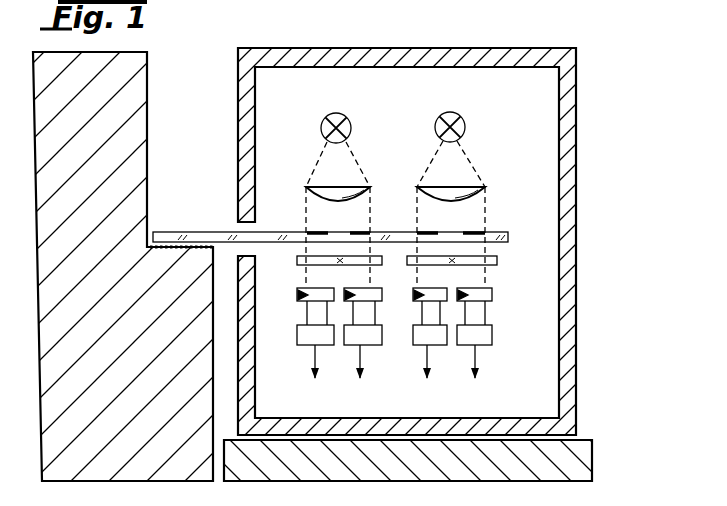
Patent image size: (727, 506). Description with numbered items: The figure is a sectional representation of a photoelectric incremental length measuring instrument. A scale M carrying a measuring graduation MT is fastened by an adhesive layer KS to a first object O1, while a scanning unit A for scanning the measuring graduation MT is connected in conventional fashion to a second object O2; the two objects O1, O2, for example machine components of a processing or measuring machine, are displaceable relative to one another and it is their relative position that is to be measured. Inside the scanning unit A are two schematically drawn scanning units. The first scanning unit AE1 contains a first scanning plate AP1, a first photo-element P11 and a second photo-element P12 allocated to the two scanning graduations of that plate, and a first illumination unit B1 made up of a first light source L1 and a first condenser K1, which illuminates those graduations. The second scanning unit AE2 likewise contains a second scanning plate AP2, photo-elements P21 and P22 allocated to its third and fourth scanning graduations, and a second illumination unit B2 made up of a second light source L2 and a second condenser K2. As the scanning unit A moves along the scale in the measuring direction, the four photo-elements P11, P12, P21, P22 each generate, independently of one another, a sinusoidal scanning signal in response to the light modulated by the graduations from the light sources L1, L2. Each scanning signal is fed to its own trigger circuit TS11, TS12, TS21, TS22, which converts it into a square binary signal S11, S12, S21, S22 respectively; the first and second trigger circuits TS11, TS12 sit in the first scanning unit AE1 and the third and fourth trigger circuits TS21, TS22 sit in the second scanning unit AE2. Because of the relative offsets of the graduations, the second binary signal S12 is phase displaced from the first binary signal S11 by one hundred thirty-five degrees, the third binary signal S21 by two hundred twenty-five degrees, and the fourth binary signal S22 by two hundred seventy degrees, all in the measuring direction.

The first object O1 is at (140, 93).
The second object O2 is at (588, 451).
The scanning unit A is at (583, 207).
The adhesive layer KS is at (189, 240).
The scale M is at (498, 229).
The measuring graduation MT is at (354, 230).
The first scanning plate AP1 is at (297, 261).
The second scanning plate AP2 is at (497, 260).
The first scanning unit AE1 is at (350, 108).
The second scanning unit AE2 is at (464, 108).
The first light source L1 is at (322, 127).
The second light source L2 is at (436, 126).
The first illumination unit B1 is at (364, 166).
The second illumination unit B2 is at (477, 166).
The first condenser K1 is at (335, 194).
The second condenser K2 is at (449, 194).
The first photo-element P11 is at (297, 295).
The second photo-element P12 is at (380, 291).
The photo-element P21 is at (412, 294).
The photo-element P22 is at (492, 294).
The first trigger circuit TS11 is at (297, 334).
The second trigger circuit TS12 is at (347, 338).
The third trigger circuit TS21 is at (414, 333).
The fourth trigger circuit TS22 is at (492, 334).
The first binary signal S11 is at (312, 366).
The second binary signal S12 is at (361, 366).
The third binary signal S21 is at (430, 362).
The fourth binary signal S22 is at (477, 359).